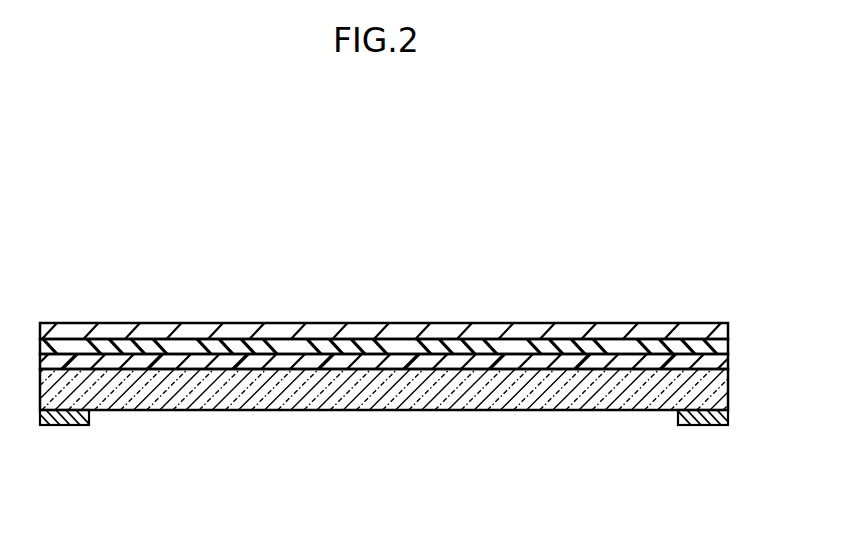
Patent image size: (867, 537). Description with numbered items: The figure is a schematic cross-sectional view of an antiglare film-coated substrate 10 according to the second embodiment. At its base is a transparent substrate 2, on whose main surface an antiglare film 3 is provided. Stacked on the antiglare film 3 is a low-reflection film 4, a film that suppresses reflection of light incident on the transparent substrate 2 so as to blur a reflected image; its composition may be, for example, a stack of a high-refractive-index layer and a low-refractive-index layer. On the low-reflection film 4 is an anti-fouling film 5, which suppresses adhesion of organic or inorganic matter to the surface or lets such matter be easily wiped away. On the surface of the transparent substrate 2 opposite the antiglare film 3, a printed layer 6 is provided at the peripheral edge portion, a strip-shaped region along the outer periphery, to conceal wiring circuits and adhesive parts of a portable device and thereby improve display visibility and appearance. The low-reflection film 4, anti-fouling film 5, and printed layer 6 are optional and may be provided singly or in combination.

The antiglare film-coated substrate 10 is at (386, 262).
The transparent substrate 2 is at (728, 388).
The antiglare film 3 is at (728, 354).
The low-reflection film 4 is at (728, 338).
The anti-fouling film 5 is at (728, 323).
The printed layer 6 is at (63, 425).